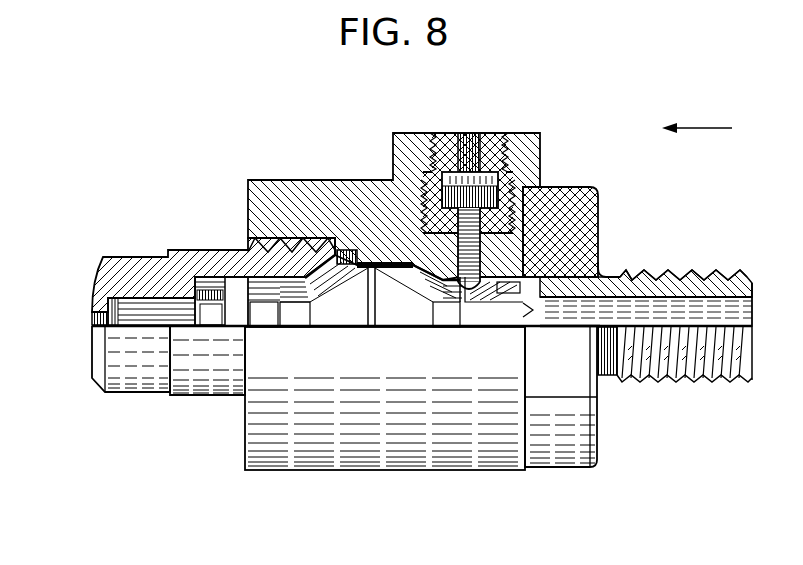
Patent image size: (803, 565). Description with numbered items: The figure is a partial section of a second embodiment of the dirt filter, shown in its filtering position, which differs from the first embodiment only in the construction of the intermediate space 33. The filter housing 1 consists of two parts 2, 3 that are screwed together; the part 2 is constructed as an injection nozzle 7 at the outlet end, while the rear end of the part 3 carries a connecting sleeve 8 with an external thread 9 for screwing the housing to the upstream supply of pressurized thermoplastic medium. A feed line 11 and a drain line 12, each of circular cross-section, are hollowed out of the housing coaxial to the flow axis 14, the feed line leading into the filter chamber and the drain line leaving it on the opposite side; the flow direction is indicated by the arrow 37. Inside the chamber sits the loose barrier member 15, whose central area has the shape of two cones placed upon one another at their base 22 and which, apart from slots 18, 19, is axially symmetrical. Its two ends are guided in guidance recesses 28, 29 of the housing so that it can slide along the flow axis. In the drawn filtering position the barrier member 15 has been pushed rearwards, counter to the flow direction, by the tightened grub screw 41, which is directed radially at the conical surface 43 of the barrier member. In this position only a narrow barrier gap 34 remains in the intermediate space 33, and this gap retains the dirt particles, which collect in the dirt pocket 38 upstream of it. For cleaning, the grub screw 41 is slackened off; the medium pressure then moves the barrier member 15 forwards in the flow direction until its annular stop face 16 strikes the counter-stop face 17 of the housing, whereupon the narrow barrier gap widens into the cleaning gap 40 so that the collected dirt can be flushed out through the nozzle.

The filter housing 1 is at (301, 180).
The housing part 2 is at (192, 266).
The housing part 3 is at (600, 254).
The injection nozzle 7 is at (92, 318).
The connecting sleeve 8 is at (667, 290).
The external thread 9 is at (712, 272).
The feed line 11 is at (638, 380).
The drain line 12 is at (113, 343).
The flow axis 14 is at (687, 380).
The barrier member 15 is at (226, 312).
The stop face 16 is at (228, 308).
The counter-stop face 17 is at (195, 287).
The slot 18 is at (584, 238).
The slot 19 is at (600, 266).
The base 22 is at (334, 250).
The guidance recess 28 is at (262, 246).
The guidance recess 29 is at (533, 282).
The intermediate space 33 is at (266, 278).
The barrier gap 34 is at (393, 283).
The flow direction arrow 37 is at (696, 128).
The dirt collecting pocket 38 is at (383, 328).
The cleaning gap 40 is at (370, 297).
The grub screw 41 is at (490, 276).
The conical surface 43 is at (520, 277).